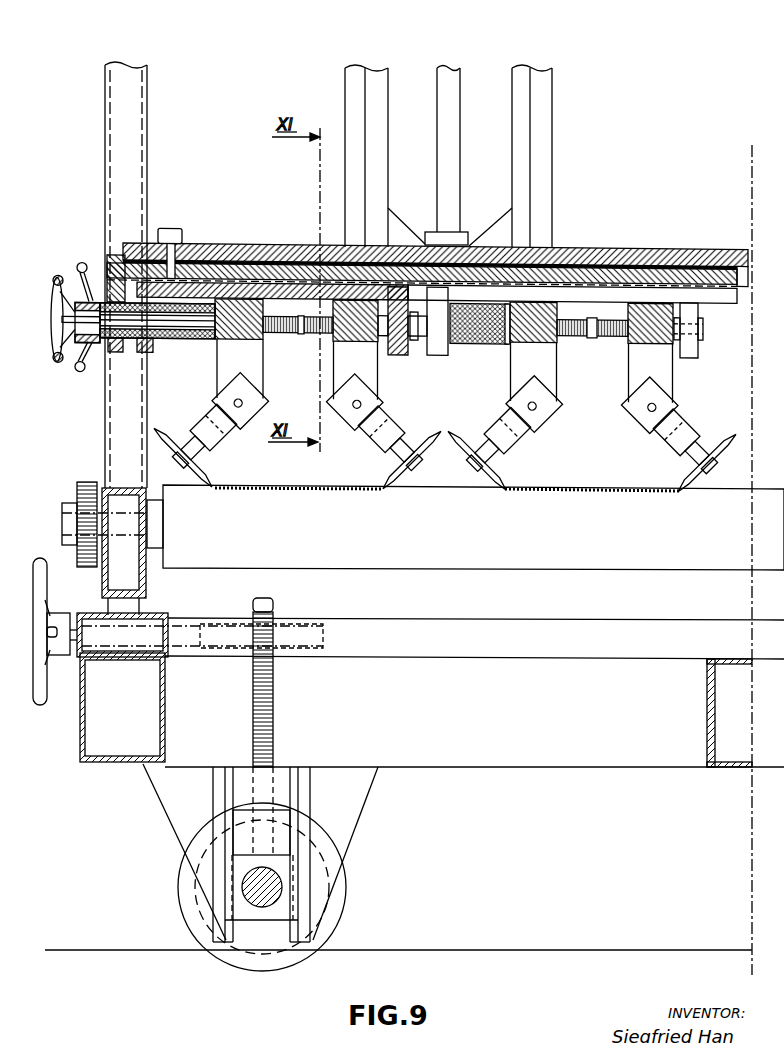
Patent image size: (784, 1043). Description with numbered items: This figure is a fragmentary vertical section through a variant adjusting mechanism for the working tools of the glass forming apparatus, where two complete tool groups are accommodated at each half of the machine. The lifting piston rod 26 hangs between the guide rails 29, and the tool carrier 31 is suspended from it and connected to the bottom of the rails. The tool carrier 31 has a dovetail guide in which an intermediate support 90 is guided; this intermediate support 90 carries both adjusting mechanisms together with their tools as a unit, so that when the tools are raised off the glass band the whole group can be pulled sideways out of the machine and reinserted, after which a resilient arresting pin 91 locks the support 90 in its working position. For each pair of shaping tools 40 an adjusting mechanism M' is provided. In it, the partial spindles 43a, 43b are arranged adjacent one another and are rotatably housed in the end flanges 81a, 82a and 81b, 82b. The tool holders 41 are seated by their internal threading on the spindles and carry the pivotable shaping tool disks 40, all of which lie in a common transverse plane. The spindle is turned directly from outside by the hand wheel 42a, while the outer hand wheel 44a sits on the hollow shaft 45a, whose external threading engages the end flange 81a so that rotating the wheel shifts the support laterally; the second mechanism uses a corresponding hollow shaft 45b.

The guide rails 29 is at (359, 77).
The lifting piston rod 26 is at (447, 77).
The tool carrier 31 is at (257, 248).
The intermediate support 90 is at (213, 268).
The resilient arresting pin 91 is at (172, 232).
The hand wheel 42a is at (59, 277).
The outer hand wheel 44a is at (91, 283).
The hollow shaft 45a is at (188, 340).
The end flange 81a is at (148, 352).
The partial spindle 43a is at (303, 333).
The end flange 82a is at (397, 346).
The end flange 81b is at (439, 346).
The hollow shaft 45b is at (483, 338).
The partial spindle 43b is at (592, 331).
The end flange 82b is at (689, 345).
The tool holders 41 is at (395, 467).
The shaping tools 40 is at (493, 462).
The adjusting mechanism M' is at (72, 394).